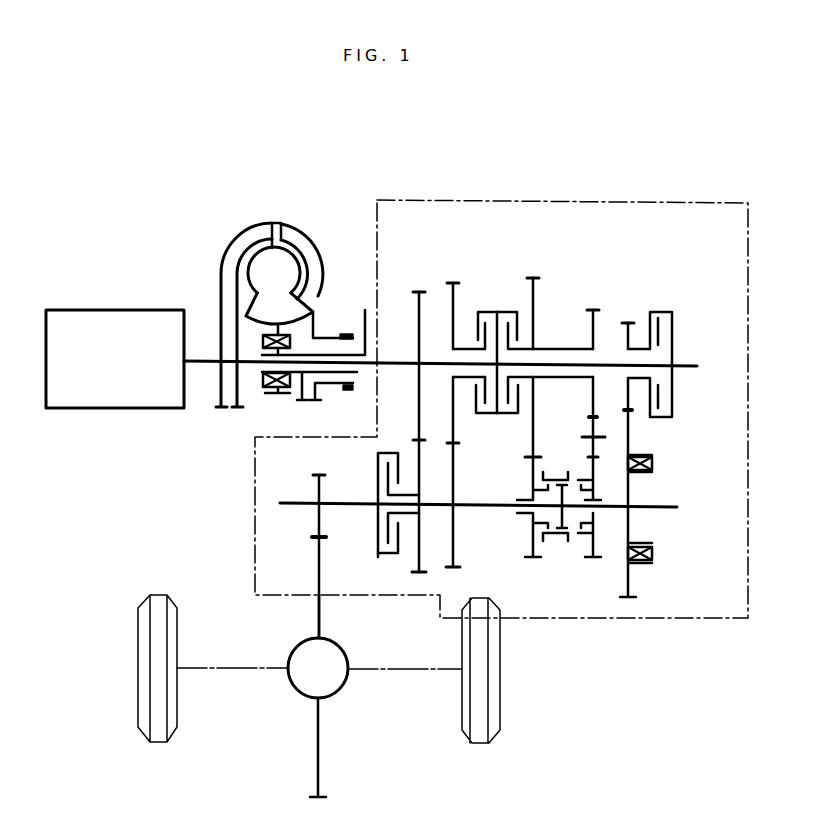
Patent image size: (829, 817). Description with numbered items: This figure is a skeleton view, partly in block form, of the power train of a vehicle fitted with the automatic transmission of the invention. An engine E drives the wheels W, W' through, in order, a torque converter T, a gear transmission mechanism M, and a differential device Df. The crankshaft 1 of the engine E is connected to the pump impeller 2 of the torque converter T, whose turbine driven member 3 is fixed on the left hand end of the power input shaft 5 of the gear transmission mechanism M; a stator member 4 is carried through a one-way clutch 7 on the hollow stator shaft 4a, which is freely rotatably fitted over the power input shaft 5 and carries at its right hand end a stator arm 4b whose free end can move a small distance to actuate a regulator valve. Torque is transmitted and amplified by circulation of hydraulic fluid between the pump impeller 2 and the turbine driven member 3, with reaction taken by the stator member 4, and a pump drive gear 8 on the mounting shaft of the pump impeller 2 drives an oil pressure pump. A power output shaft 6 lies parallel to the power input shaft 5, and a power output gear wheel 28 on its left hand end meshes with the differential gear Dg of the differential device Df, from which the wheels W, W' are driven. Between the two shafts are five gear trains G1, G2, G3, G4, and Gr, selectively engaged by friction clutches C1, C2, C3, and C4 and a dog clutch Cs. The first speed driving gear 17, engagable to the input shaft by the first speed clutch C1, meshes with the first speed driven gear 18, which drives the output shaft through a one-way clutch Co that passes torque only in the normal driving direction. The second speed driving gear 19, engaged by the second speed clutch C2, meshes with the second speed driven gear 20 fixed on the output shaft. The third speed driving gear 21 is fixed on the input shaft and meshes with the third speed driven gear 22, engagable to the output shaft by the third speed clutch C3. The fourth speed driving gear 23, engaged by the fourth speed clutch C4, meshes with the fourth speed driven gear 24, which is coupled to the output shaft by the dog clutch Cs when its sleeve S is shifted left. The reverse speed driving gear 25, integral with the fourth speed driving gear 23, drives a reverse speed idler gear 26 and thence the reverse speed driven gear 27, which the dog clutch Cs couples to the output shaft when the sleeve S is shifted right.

The engine E is at (121, 375).
The crankshaft 1 is at (201, 368).
The torque converter T is at (282, 286).
The pump impeller 2 is at (315, 269).
The turbine driven member 3 is at (241, 243).
The stator member 4 is at (305, 302).
The stator shaft 4a is at (358, 373).
The stator arm 4b is at (365, 308).
The power input shaft 5 is at (302, 388).
The power output shaft 6 is at (301, 508).
The one-way clutch 7 is at (262, 340).
The pump drive gear 8 is at (348, 333).
The gear transmission mechanism M is at (565, 200).
The first speed driving gear 17 is at (628, 348).
The first speed driven gear 18 is at (630, 431).
The second speed driving gear 19 is at (453, 333).
The second speed driven gear 20 is at (455, 470).
The third speed driving gear 21 is at (405, 412).
The third speed driven gear 22 is at (414, 555).
The fourth speed driving gear 23 is at (535, 292).
The fourth speed driven gear 24 is at (530, 486).
The reverse speed driving gear 25 is at (591, 340).
The reverse speed idler gear 26 is at (591, 417).
The reverse speed driven gear 27 is at (600, 480).
The power output gear wheel 28 is at (317, 484).
The first speed gear train G1 is at (628, 321).
The second speed gear train G2 is at (453, 281).
The third speed gear train G3 is at (420, 290).
The fourth speed gear train G4 is at (533, 276).
The reverse speed gear train Gr is at (593, 308).
The first speed clutch C1 is at (664, 311).
The second speed clutch C2 is at (478, 311).
The third speed clutch C3 is at (377, 478).
The fourth speed clutch C4 is at (509, 311).
The dog clutch Cs is at (540, 565).
The sleeve S is at (552, 545).
The one-way clutch Co is at (654, 554).
The differential gear Dg is at (320, 618).
The differential device Df is at (342, 688).
The wheel W is at (213, 686).
The wheel W' is at (432, 690).